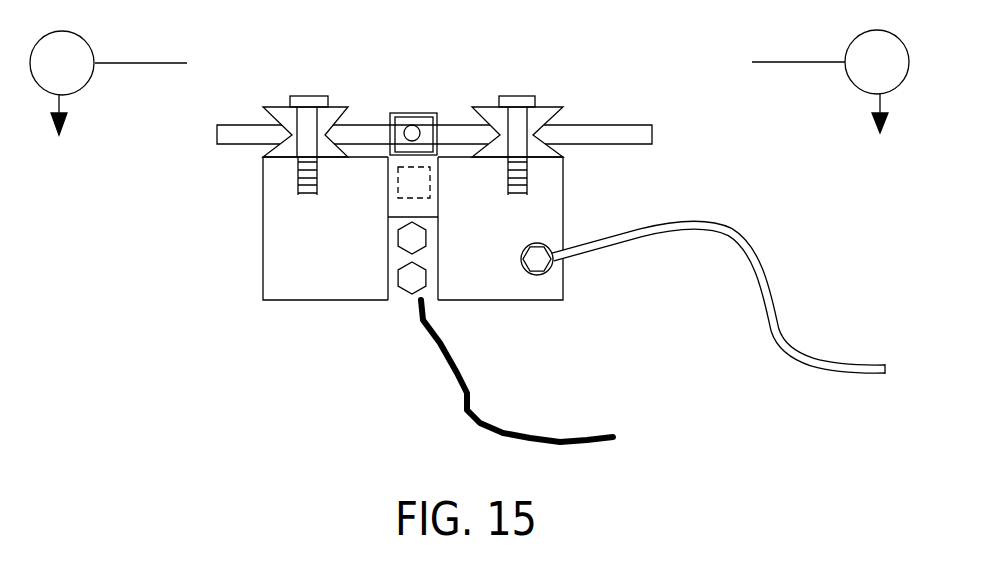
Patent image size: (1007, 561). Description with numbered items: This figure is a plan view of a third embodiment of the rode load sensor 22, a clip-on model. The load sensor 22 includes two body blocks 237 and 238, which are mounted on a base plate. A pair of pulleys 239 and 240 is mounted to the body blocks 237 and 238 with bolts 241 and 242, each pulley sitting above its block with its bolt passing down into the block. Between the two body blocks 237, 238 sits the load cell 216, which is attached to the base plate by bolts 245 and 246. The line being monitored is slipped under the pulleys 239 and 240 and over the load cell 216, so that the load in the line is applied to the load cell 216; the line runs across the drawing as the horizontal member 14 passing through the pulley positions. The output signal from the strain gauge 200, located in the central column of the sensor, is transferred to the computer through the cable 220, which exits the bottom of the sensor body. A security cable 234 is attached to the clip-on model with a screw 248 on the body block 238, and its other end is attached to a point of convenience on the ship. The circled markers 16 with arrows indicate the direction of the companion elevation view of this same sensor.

The support bar 14 is at (623, 132).
The section line indicator 16 is at (469, 82).
The load sensor 22 is at (383, 295).
The strain gauge 200 is at (412, 180).
The load cell 216 is at (407, 115).
The cable 220 is at (468, 388).
The security cable 234 is at (712, 220).
The body block 237 is at (285, 216).
The body block 238 is at (530, 215).
The pulley 239 is at (287, 118).
The pulley 240 is at (540, 117).
The bolt 241 is at (297, 94).
The bolt 242 is at (524, 100).
The bolt 245 is at (405, 242).
The bolt 246 is at (408, 282).
The screw 248 is at (540, 260).